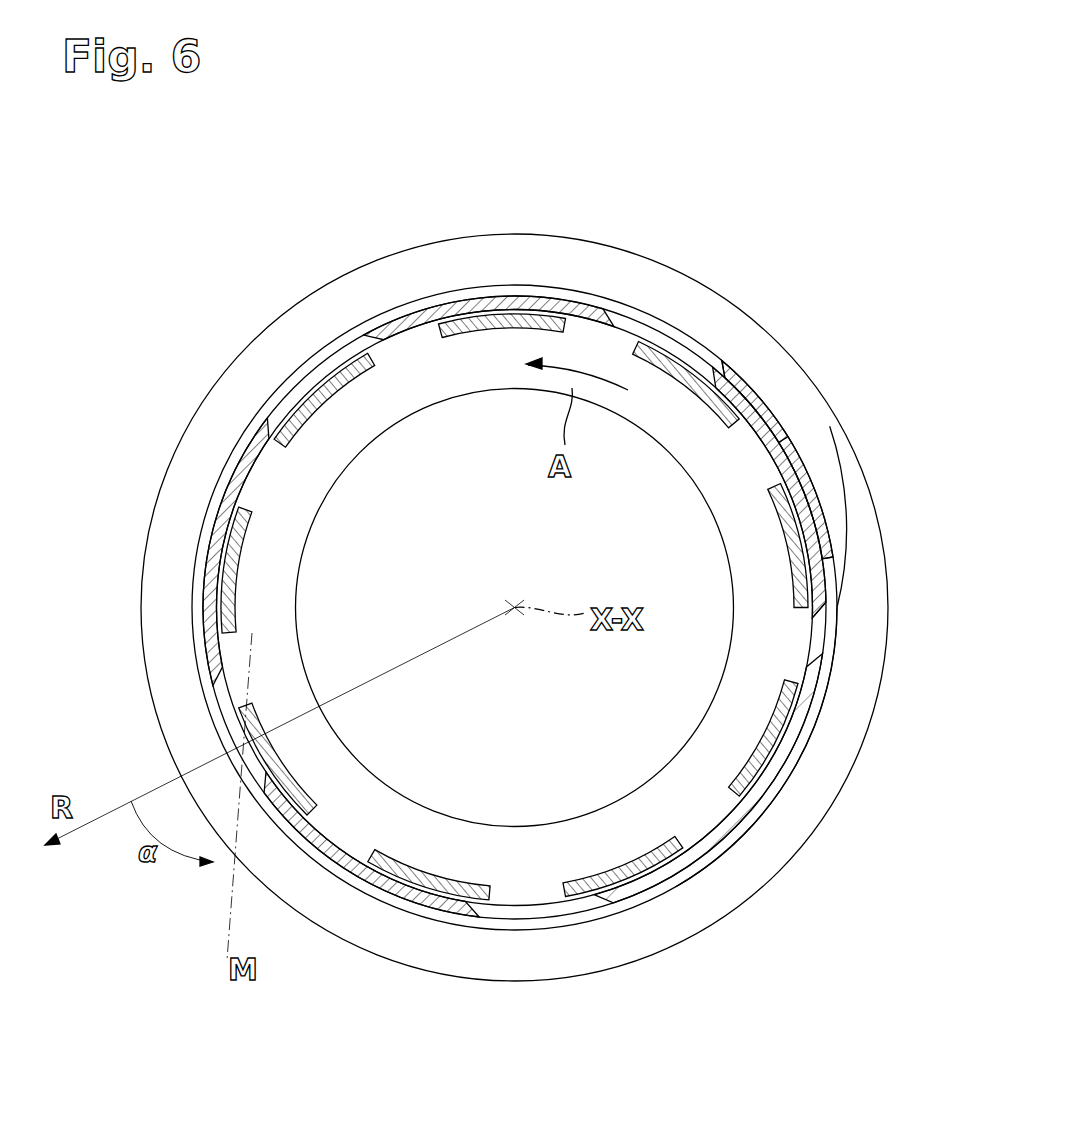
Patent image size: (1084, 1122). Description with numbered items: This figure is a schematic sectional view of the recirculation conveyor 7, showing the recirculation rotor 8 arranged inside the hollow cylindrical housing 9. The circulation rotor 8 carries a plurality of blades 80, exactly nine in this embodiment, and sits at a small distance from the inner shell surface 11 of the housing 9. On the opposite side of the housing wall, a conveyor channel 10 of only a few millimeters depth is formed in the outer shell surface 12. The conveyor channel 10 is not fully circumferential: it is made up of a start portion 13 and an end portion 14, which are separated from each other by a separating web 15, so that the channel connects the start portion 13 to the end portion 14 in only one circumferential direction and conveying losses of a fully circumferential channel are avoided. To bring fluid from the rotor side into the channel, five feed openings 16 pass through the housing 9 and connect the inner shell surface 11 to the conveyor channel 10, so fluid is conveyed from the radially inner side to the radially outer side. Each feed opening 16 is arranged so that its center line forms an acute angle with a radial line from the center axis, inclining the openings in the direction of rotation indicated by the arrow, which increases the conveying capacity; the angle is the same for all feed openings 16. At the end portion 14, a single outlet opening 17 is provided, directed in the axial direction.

The recirculation conveyor 7 is at (212, 215).
The recirculation rotor 8 is at (428, 382).
The hollow cylindrical housing 9 is at (565, 265).
The conveyor channel 10 is at (431, 915).
The inner shell surface 11 is at (800, 603).
The outer shell surface 12 is at (820, 722).
The start portion 13 is at (725, 352).
The end portion 14 is at (838, 497).
The separating web 15 is at (805, 482).
The feed openings 16 is at (637, 328).
The outlet opening 17 is at (812, 470).
The blades 80 is at (482, 322).